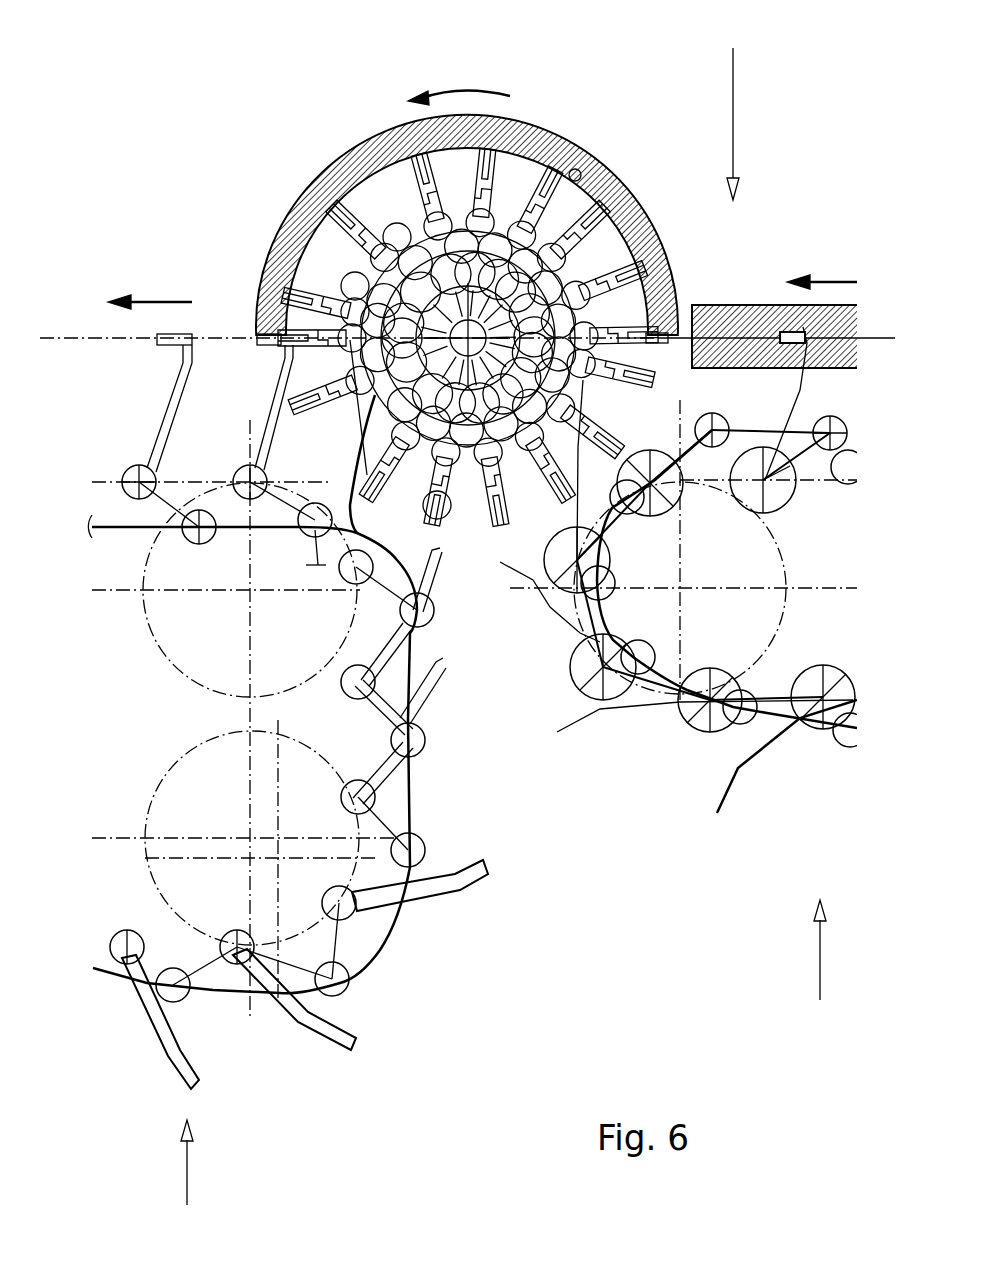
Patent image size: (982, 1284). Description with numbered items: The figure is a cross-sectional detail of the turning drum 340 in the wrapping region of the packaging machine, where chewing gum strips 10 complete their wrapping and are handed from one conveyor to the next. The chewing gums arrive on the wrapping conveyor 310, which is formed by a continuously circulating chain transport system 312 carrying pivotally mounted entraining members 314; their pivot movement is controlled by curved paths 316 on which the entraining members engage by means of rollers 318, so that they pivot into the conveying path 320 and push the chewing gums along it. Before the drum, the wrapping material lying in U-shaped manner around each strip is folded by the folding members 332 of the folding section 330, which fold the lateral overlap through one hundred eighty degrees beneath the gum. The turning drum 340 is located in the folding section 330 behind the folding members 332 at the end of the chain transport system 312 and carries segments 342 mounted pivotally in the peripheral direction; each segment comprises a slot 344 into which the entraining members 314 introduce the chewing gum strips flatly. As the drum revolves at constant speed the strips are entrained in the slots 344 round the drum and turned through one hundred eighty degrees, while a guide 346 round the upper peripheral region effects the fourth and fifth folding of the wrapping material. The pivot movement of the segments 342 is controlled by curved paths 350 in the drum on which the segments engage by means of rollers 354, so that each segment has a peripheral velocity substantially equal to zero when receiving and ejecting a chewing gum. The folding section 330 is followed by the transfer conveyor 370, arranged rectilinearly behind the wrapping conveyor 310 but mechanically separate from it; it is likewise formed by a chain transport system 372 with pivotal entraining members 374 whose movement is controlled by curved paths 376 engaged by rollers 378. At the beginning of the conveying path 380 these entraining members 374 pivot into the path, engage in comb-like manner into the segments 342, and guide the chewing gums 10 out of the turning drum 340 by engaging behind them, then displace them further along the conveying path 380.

The chewing gum strips 10 is at (633, 177).
The wrapping conveyor 310 is at (826, 967).
The chain transport system 312 is at (645, 695).
The entraining members 314 is at (732, 790).
The curved paths 316 is at (740, 430).
The rollers 318 is at (755, 725).
The conveying path 320 is at (767, 338).
The folding section 330 is at (731, 107).
The folding members 332 is at (752, 320).
The turning drum 340 is at (577, 170).
The segments 342 is at (550, 137).
The slots 344 is at (437, 517).
The guide 346 is at (393, 137).
The curved paths 350 is at (395, 230).
The rollers 354 is at (350, 280).
The transfer conveyor 370 is at (194, 1179).
The chain transport system 372 is at (155, 950).
The entraining members 374 is at (300, 1027).
The curved paths 376 is at (382, 945).
The rollers 378 is at (338, 990).
The conveying path 380 is at (73, 335).